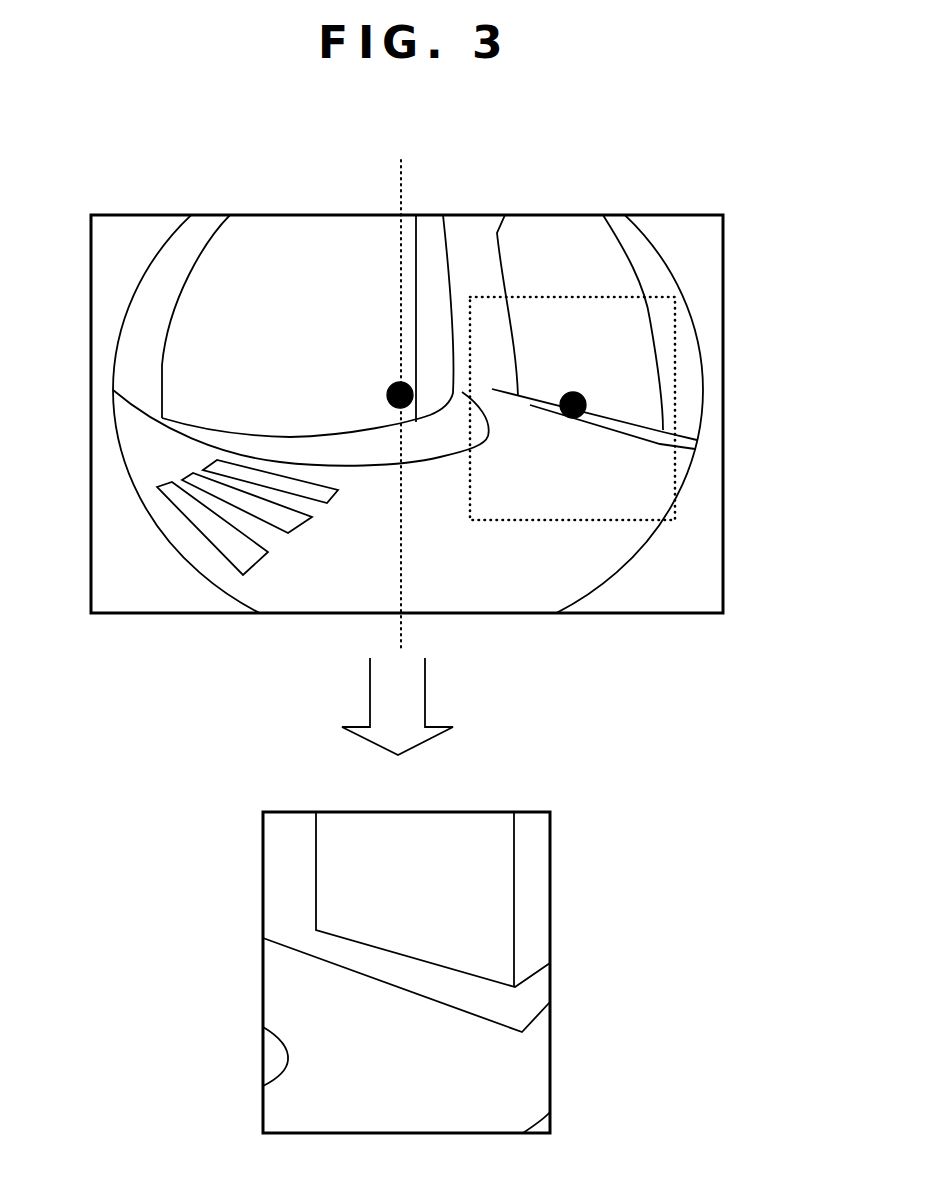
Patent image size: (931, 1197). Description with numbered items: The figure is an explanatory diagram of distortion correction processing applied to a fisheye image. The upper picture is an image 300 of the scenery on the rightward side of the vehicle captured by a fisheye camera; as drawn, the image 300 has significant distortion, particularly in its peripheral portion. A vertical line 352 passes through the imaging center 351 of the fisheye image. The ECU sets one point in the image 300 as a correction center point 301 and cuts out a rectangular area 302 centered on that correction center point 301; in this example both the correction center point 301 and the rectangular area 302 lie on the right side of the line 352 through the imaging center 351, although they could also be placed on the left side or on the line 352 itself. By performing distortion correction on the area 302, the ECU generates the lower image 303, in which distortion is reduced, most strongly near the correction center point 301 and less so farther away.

The image 300 is at (668, 214).
The correction center point 301 is at (585, 397).
The rectangular area 302 is at (680, 330).
The image 303 is at (485, 812).
The imaging center 351 is at (393, 383).
The vertical line 352 is at (403, 172).